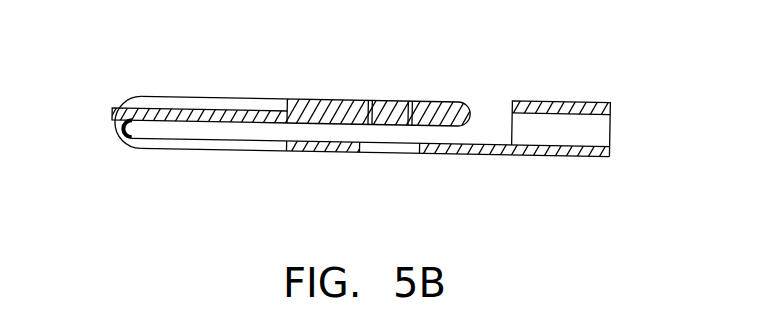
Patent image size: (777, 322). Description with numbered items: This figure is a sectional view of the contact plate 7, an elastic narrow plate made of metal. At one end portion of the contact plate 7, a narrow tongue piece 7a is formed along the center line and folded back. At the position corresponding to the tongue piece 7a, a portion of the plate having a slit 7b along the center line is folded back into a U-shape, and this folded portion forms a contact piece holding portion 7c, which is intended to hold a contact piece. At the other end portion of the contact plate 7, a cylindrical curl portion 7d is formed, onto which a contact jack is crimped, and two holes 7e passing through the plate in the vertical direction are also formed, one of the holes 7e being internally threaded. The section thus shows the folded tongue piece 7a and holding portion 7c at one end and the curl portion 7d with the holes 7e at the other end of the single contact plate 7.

The contact plate 7 is at (476, 95).
The tongue piece 7a is at (202, 112).
The slit 7b is at (156, 149).
The contact piece holding portion 7c is at (128, 131).
The curl portion 7d is at (582, 136).
The holes 7e is at (386, 148).